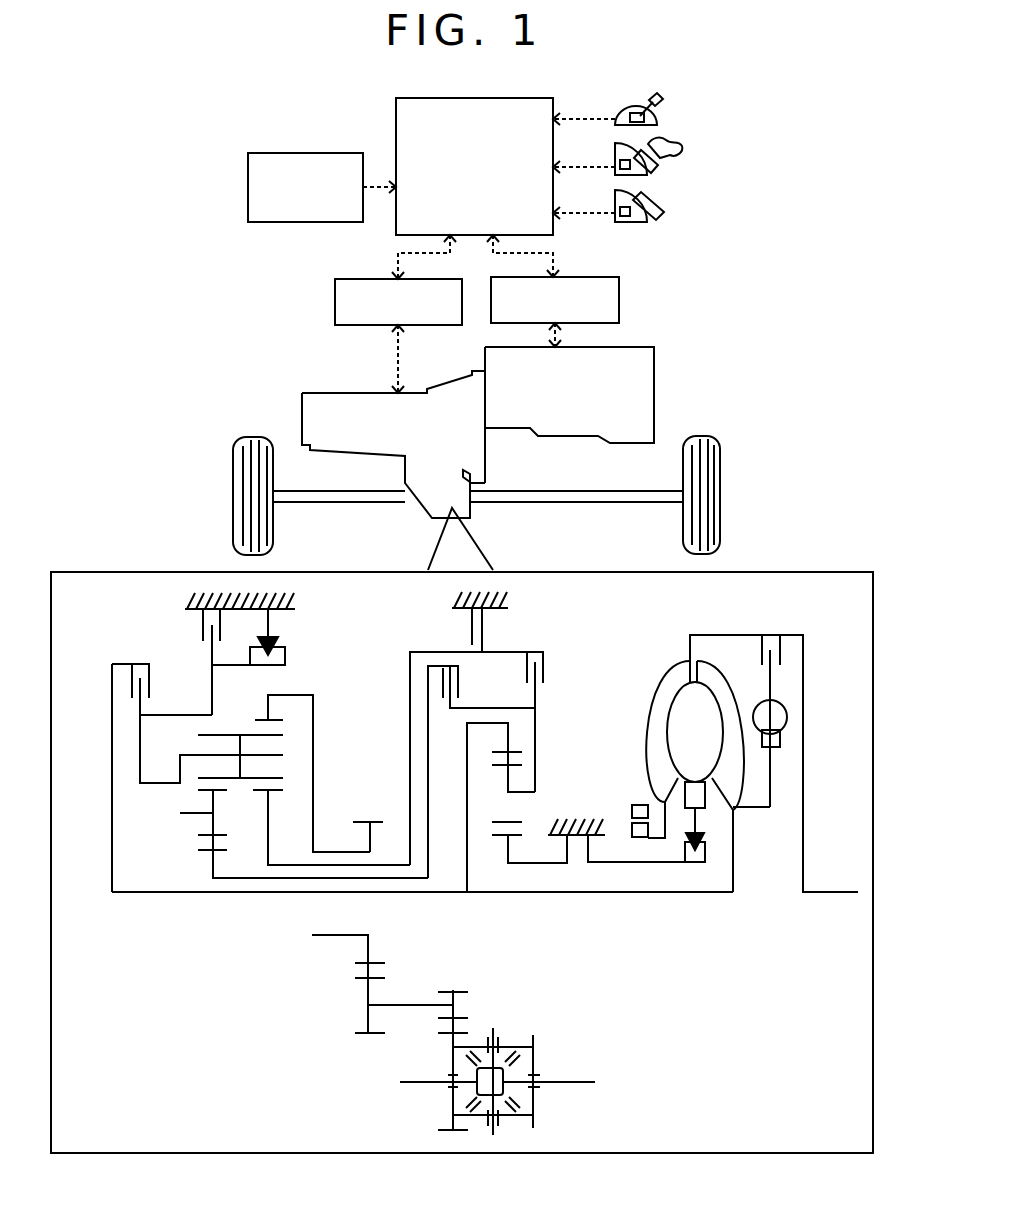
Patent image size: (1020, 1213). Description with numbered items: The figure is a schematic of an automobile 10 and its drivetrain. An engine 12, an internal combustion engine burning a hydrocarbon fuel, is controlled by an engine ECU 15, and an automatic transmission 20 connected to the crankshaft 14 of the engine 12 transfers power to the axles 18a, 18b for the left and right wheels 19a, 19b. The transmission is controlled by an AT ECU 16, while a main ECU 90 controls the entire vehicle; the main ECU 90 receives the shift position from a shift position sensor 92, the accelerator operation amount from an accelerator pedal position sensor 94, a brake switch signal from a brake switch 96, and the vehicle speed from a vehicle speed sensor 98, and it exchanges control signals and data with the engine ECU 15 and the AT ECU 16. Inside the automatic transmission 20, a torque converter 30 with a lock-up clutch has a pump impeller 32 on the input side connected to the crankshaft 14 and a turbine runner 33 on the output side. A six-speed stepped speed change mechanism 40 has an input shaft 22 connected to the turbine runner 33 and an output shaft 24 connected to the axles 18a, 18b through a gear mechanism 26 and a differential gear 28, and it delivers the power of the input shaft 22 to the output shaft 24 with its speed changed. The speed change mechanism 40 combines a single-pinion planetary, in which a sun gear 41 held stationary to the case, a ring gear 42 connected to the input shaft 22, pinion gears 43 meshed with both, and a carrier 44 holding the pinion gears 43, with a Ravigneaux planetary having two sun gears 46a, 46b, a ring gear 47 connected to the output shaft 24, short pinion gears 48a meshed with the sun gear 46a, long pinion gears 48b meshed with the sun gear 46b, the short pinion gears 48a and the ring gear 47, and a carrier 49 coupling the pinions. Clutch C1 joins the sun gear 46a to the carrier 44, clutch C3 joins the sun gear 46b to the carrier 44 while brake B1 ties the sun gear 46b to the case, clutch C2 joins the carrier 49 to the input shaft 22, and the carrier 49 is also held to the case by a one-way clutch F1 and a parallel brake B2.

The automobile 10 is at (173, 157).
The engine 12 is at (654, 392).
The crankshaft 14 is at (817, 892).
The engine electronic control unit 15 is at (619, 298).
The automatic transmission electronic control unit 16 is at (335, 300).
The axle 18a is at (565, 491).
The axle 18b is at (300, 491).
The wheel 19a is at (720, 495).
The wheel 19b is at (233, 497).
The automatic transmission 20 is at (302, 420).
The input shaft 22 is at (693, 892).
The output shaft 24 is at (345, 850).
The gear mechanism 26 is at (482, 993).
The differential gear 28 is at (548, 1033).
The torque converter 30 is at (668, 645).
The pump impeller 32 is at (647, 703).
The turbine runner 33 is at (742, 662).
The speed change mechanism 40 is at (265, 957).
The sun gear 41 is at (500, 838).
The ring gear 42 is at (515, 750).
The pinion gear 43 is at (523, 822).
The carrier 44 is at (527, 792).
The sun gear 46a is at (210, 850).
The sun gear 46b is at (265, 817).
The ring gear 47 is at (277, 718).
The short pinion gear 48a is at (213, 813).
The long pinion gear 48b is at (223, 733).
The carrier 49 is at (153, 783).
The main electronic control unit 90 is at (396, 125).
The shift position sensor 92 is at (657, 125).
The accelerator pedal position sensor 94 is at (660, 170).
The brake switch 96 is at (660, 215).
The vehicle speed sensor 98 is at (248, 183).
The brake B1 is at (482, 620).
The brake B2 is at (203, 625).
The clutch C1 is at (443, 680).
The clutch C2 is at (114, 675).
The clutch C3 is at (545, 665).
The one-way clutch F1 is at (276, 641).